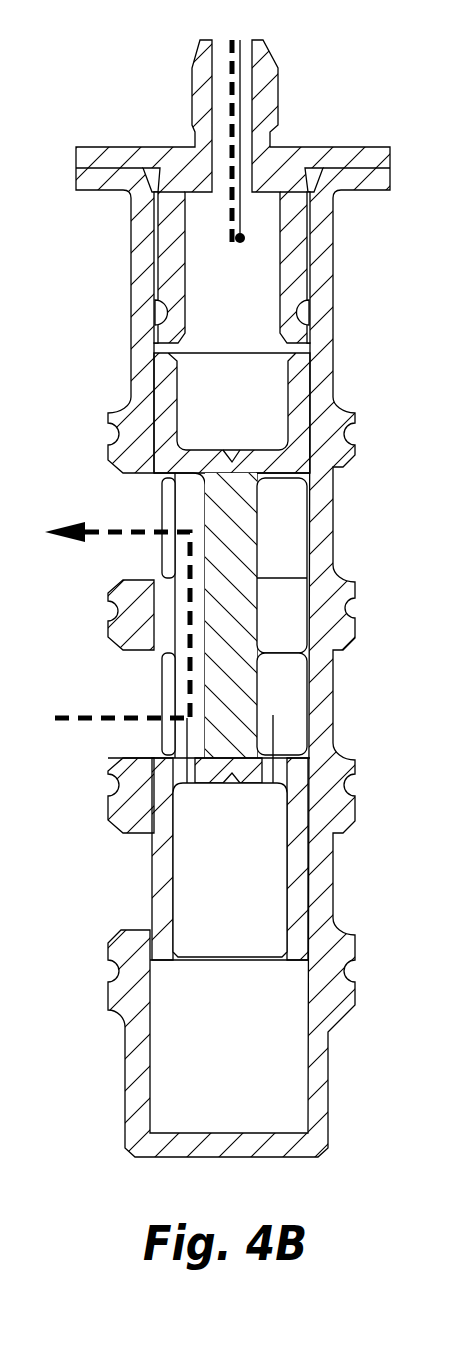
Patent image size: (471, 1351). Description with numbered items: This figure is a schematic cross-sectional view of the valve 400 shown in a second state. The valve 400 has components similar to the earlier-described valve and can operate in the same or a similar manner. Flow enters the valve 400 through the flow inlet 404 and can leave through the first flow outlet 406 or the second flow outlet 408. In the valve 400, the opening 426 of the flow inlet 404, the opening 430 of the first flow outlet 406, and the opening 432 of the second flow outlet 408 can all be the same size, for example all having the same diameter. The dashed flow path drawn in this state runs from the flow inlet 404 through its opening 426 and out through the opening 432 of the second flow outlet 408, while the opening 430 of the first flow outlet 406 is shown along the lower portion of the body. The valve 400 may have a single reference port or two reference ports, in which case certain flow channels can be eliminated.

The valve 400 is at (96, 85).
The flow inlet 404 is at (110, 733).
The first flow outlet 406 is at (118, 899).
The second flow outlet 408 is at (96, 556).
The opening of the flow inlet 426 is at (162, 670).
The opening of the first flow outlet 430 is at (150, 840).
The opening of the second flow outlet 432 is at (162, 505).